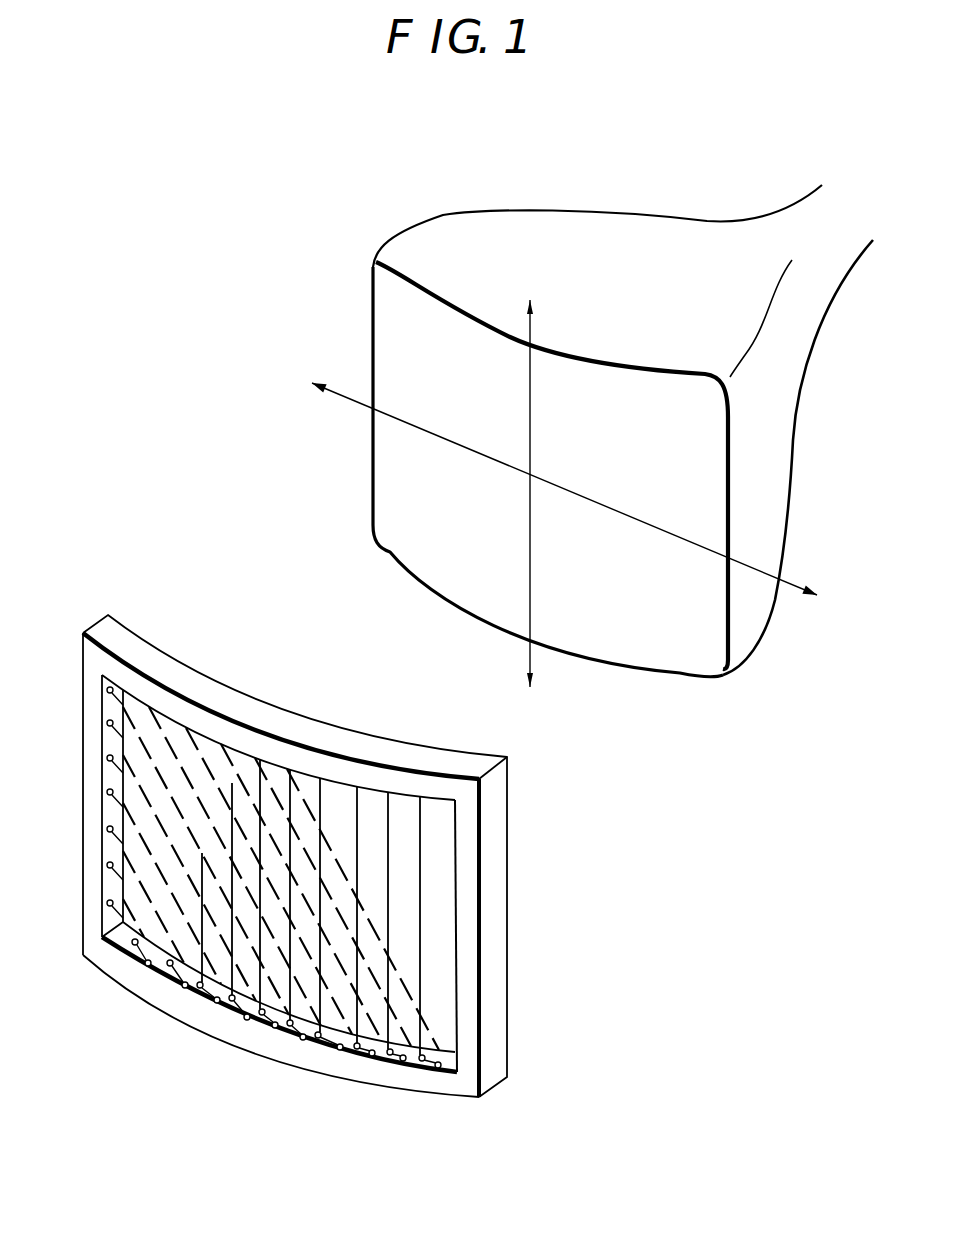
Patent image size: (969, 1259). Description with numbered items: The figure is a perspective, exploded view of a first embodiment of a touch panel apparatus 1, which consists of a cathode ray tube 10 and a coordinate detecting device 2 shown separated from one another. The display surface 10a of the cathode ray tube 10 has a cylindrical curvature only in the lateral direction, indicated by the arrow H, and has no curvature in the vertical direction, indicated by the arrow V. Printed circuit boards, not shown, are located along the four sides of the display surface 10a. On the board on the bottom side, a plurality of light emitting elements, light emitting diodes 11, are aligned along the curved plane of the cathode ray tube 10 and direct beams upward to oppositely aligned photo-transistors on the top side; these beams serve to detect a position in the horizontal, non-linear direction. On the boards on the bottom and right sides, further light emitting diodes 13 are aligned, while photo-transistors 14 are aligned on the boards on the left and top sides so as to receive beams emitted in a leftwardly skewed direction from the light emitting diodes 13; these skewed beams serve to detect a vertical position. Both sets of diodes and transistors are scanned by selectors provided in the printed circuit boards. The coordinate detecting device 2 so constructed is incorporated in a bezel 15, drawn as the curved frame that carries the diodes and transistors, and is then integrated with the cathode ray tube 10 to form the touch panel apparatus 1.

The touch panel apparatus 1 is at (203, 388).
The cathode ray tube 10 is at (582, 223).
The display surface 10a is at (720, 538).
The vertical direction V is at (530, 358).
The lateral direction H is at (460, 445).
The coordinate detecting device 2 is at (524, 1042).
The bezel 15 is at (345, 740).
The photo-transistors 14 is at (115, 690).
The light emitting diodes 11 is at (170, 966).
The light emitting diodes 13 is at (402, 1061).